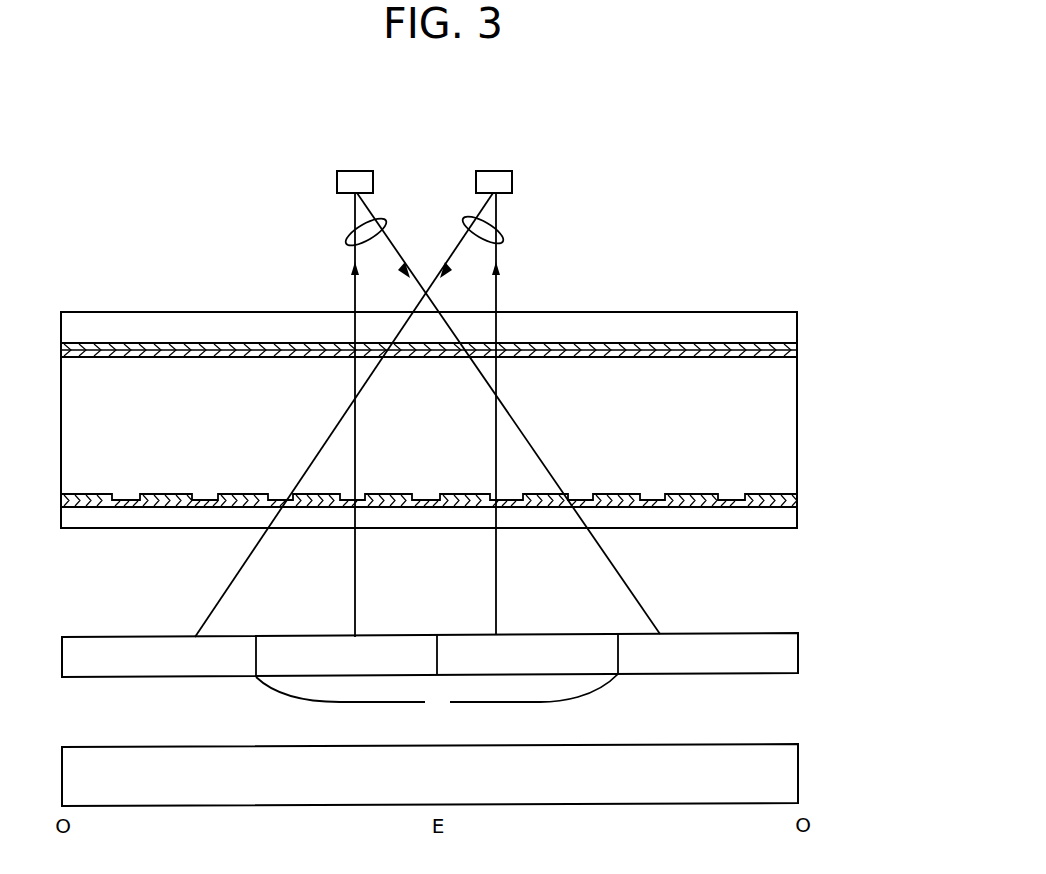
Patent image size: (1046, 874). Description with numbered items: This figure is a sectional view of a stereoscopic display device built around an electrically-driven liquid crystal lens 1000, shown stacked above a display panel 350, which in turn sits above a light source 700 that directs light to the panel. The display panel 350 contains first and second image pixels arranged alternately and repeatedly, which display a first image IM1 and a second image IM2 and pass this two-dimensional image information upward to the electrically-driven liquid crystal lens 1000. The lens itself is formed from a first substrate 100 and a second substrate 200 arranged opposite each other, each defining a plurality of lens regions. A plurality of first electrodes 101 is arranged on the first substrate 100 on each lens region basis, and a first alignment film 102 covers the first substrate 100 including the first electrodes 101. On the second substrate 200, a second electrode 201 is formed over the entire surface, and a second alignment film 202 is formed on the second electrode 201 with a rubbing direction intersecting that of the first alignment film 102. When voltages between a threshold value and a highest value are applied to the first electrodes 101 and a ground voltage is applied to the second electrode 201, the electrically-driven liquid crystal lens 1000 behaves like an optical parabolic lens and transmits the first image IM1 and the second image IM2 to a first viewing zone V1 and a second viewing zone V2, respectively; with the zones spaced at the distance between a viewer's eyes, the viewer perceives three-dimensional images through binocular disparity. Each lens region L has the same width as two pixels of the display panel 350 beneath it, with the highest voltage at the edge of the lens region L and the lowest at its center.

The electrically-driven liquid crystal lens 1000 is at (508, 423).
The second substrate 200 is at (788, 324).
The second electrode 201 is at (797, 349).
The second alignment film 202 is at (797, 358).
The first alignment film 102 is at (797, 497).
The first electrodes 101 is at (797, 504).
The first substrate 100 is at (468, 523).
The display panel 350 is at (790, 652).
The light source 700 is at (790, 774).
The first viewing zone V1 is at (355, 169).
The second viewing zone V2 is at (494, 169).
The first image IM1 is at (348, 232).
The second image IM2 is at (504, 231).
The lens region L is at (437, 694).